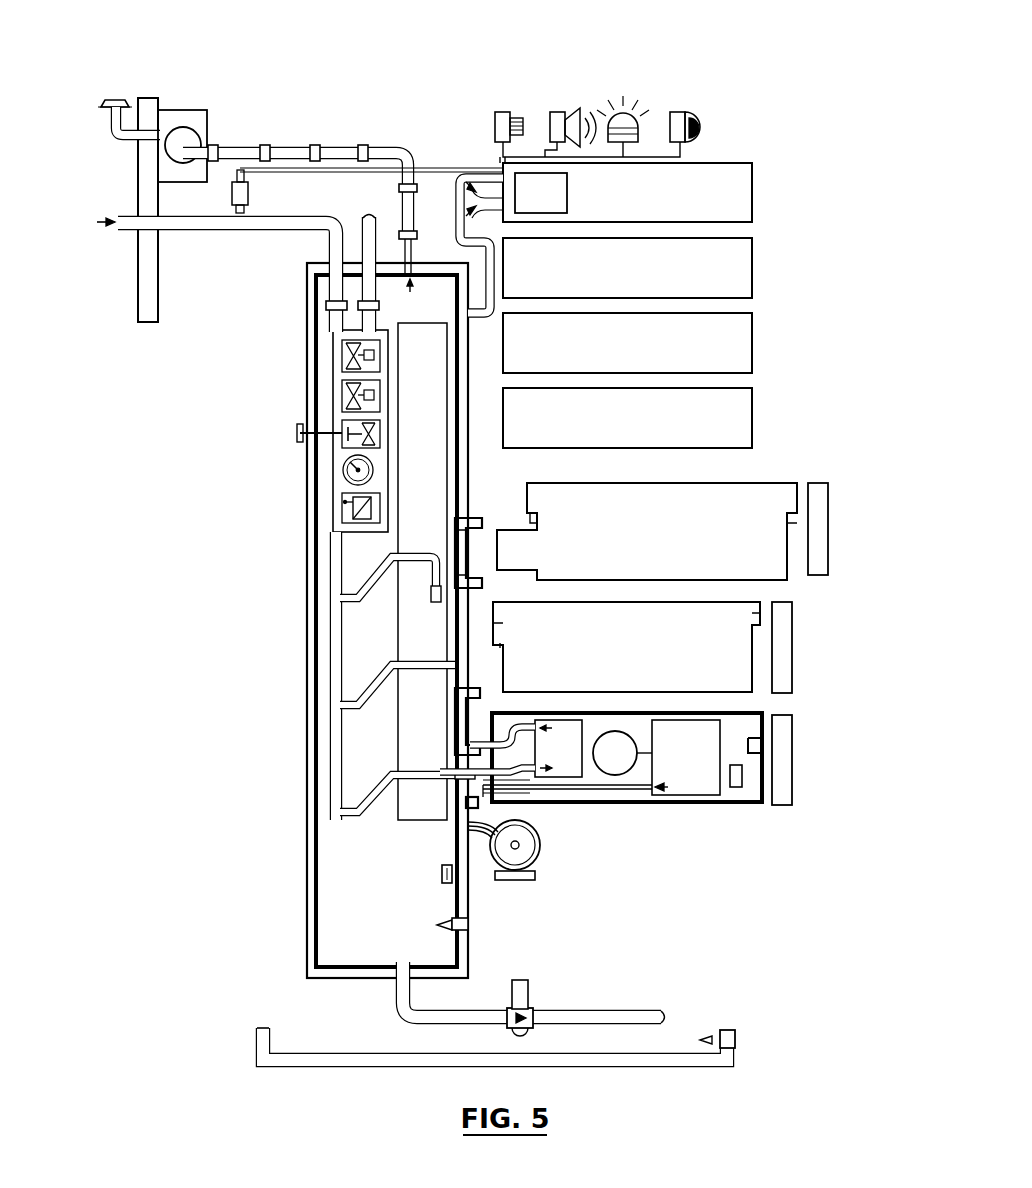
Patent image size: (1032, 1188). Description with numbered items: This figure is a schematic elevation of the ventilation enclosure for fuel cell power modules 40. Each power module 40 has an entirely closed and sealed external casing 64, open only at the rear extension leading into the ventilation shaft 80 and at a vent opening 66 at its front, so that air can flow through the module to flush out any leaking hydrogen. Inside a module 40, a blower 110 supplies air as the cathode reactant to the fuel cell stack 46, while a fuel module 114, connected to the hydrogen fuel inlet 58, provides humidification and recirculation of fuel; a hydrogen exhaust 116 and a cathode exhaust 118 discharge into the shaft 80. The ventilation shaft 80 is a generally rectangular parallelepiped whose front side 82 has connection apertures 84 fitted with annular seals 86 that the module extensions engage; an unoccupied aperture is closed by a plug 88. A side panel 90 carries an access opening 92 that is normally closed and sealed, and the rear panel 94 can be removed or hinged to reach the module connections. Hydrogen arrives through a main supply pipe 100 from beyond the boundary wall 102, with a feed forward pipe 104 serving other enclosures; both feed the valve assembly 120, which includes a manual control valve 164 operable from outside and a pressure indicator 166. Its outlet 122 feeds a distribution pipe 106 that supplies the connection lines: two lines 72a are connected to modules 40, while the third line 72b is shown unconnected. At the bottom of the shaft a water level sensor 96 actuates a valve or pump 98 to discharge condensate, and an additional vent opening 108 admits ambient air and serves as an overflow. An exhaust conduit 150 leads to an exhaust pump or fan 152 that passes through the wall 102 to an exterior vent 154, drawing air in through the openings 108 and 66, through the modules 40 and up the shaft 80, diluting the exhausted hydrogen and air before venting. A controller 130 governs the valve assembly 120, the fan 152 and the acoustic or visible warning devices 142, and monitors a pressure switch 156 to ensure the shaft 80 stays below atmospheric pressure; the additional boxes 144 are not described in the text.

The power module 40 is at (718, 556).
The fuel cell stack 46 is at (676, 768).
The hydrogen fuel inlet 58 is at (530, 778).
The external casing 64 is at (750, 708).
The vent opening 66 is at (745, 776).
The connection line 72a is at (342, 800).
The connection line 72b is at (342, 590).
The ventilation shaft 80 is at (307, 905).
The front side 82 is at (472, 480).
The connection aperture 84 is at (492, 806).
The annular seal 86 is at (455, 825).
The plug 88 is at (500, 548).
The side panel 90 is at (366, 921).
The access opening 92 is at (408, 808).
The rear panel 94 is at (307, 832).
The water level sensor 96 is at (472, 922).
The valve or pump 98 is at (530, 993).
The hydrogen supply pipe 100 is at (258, 230).
The boundary wall 102 is at (160, 300).
The hydrogen feed forward pipe 104 is at (355, 262).
The distribution pipe 106 is at (312, 655).
The vent opening 108 is at (455, 872).
The blower 110 is at (615, 735).
The fuel module 114 is at (540, 760).
The exhaust 116 is at (527, 733).
The exhaust 118 is at (535, 785).
The valve assembly 120 is at (335, 394).
The outlet 122 is at (340, 520).
The controller 130 is at (745, 190).
The warning devices 142 is at (641, 108).
The control module 144 is at (745, 415).
The exhaust conduit 150 is at (410, 150).
The exhaust pump or fan 152 is at (195, 132).
The exterior vent 154 is at (115, 98).
The pressure switch 156 is at (525, 855).
The manual control valve 164 is at (300, 433).
The pressure indicator 166 is at (344, 470).